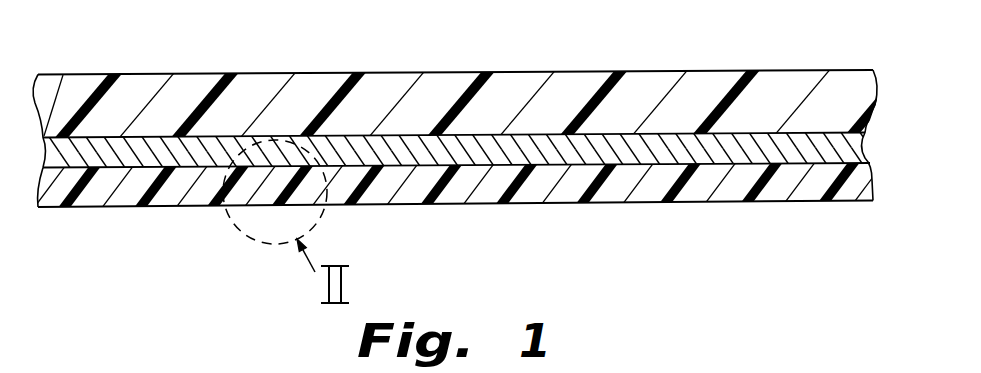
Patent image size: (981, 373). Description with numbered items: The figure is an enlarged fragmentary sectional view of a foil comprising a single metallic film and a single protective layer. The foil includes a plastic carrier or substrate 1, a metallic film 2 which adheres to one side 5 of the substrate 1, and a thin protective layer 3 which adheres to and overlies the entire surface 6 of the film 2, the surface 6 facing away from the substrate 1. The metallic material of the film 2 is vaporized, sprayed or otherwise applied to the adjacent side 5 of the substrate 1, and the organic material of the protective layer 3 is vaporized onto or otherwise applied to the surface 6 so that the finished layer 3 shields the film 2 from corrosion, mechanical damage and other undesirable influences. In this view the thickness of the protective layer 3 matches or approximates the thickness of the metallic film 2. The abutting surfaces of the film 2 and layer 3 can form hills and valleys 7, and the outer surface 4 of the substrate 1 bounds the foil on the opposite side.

The substrate 1 is at (713, 85).
The metallic film 2 is at (757, 143).
The protective layer 3 is at (813, 182).
The outer surface of first layer 4 is at (593, 70).
The side of the substrate 5 is at (662, 135).
The surface of the film 6 is at (124, 150).
The hills and valleys 7 is at (465, 150).